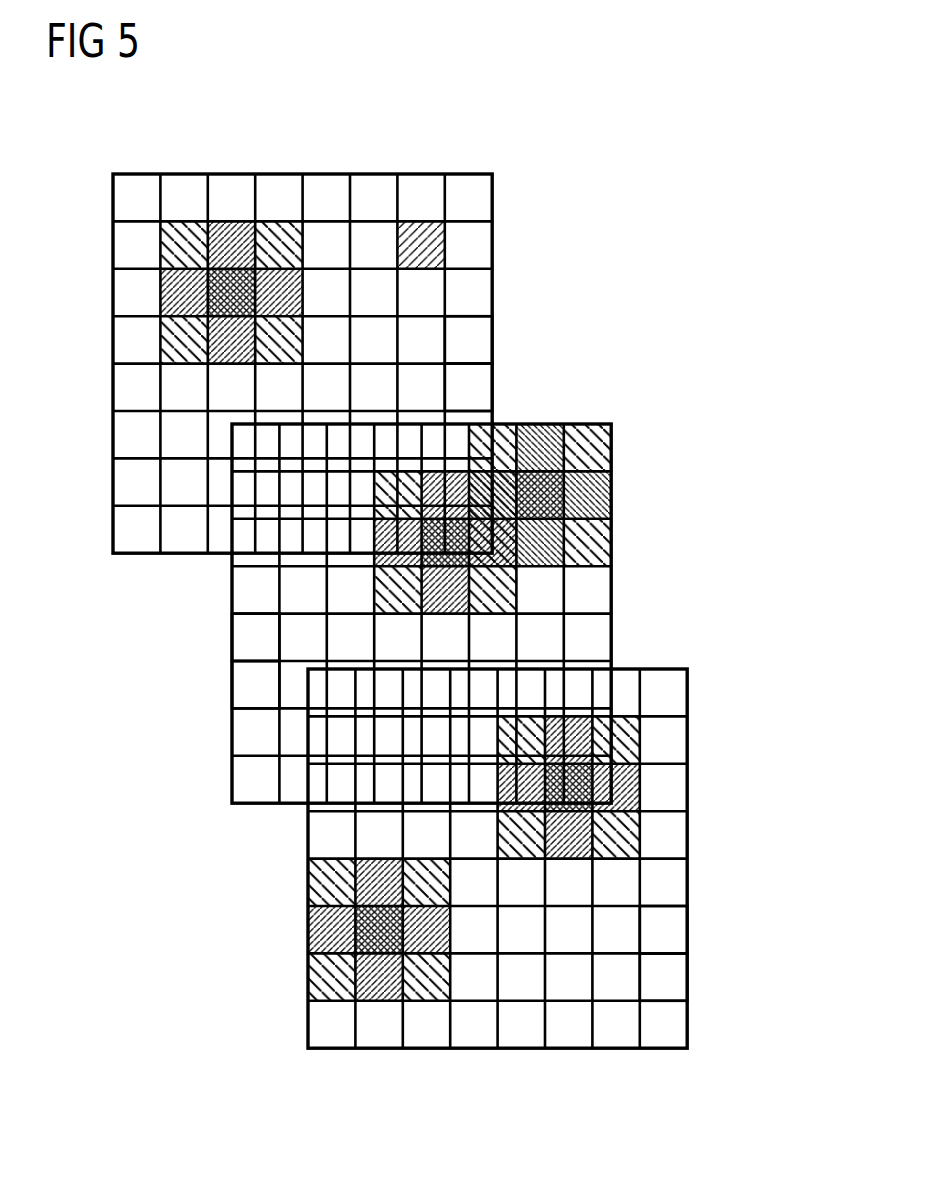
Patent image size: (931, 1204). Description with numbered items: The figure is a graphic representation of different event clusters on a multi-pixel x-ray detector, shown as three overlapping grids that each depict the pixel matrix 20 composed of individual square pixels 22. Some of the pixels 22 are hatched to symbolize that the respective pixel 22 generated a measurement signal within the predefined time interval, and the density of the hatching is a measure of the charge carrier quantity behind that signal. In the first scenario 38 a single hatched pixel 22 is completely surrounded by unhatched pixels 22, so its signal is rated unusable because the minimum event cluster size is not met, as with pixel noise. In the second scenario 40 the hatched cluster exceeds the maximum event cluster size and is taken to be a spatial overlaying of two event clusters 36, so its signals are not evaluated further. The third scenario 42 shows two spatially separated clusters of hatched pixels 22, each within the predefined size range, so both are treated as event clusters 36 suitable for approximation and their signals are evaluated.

The pixel matrix 20 is at (469, 565).
The pixel 22 is at (486, 336).
The event cluster 36 is at (165, 293).
The first scenario 38 is at (547, 198).
The second scenario 40 is at (666, 448).
The third scenario 42 is at (740, 700).